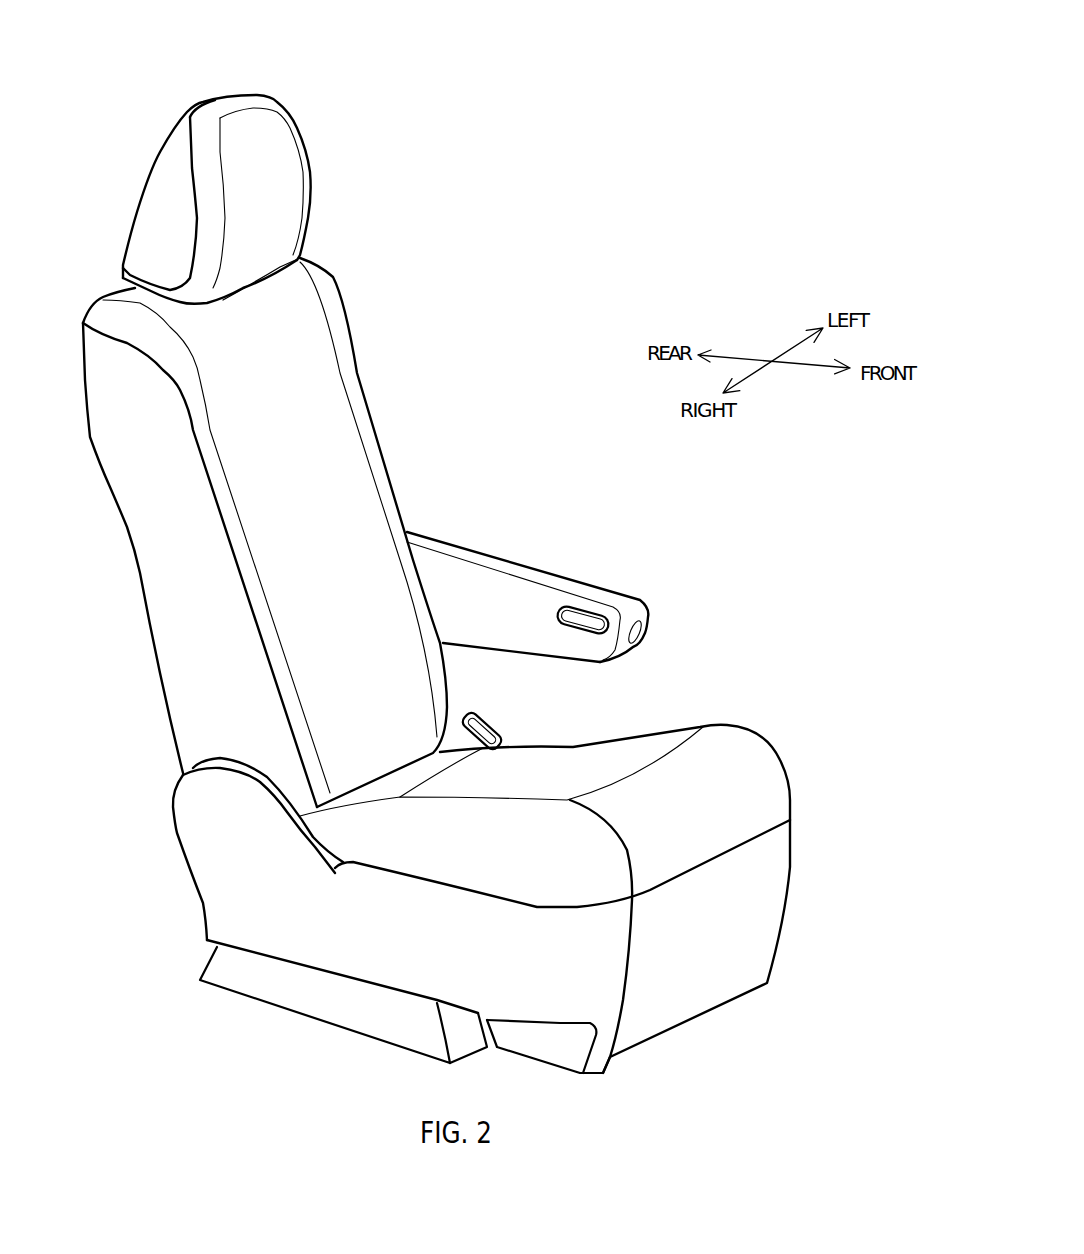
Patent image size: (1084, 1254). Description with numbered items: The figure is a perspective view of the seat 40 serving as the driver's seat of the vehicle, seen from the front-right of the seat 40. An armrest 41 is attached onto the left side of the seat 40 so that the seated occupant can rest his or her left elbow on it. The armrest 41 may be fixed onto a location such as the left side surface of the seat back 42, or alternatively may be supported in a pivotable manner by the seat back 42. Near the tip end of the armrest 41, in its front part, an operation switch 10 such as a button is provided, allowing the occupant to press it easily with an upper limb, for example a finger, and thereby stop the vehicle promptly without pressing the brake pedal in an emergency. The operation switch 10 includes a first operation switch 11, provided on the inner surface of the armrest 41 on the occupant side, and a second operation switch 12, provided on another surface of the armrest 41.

The seat 40 is at (684, 134).
The seat back 42 is at (328, 383).
The armrest 41 is at (493, 553).
The operation switch 10 is at (723, 603).
The first operation switch 11 is at (590, 633).
The second operation switch 12 is at (645, 605).